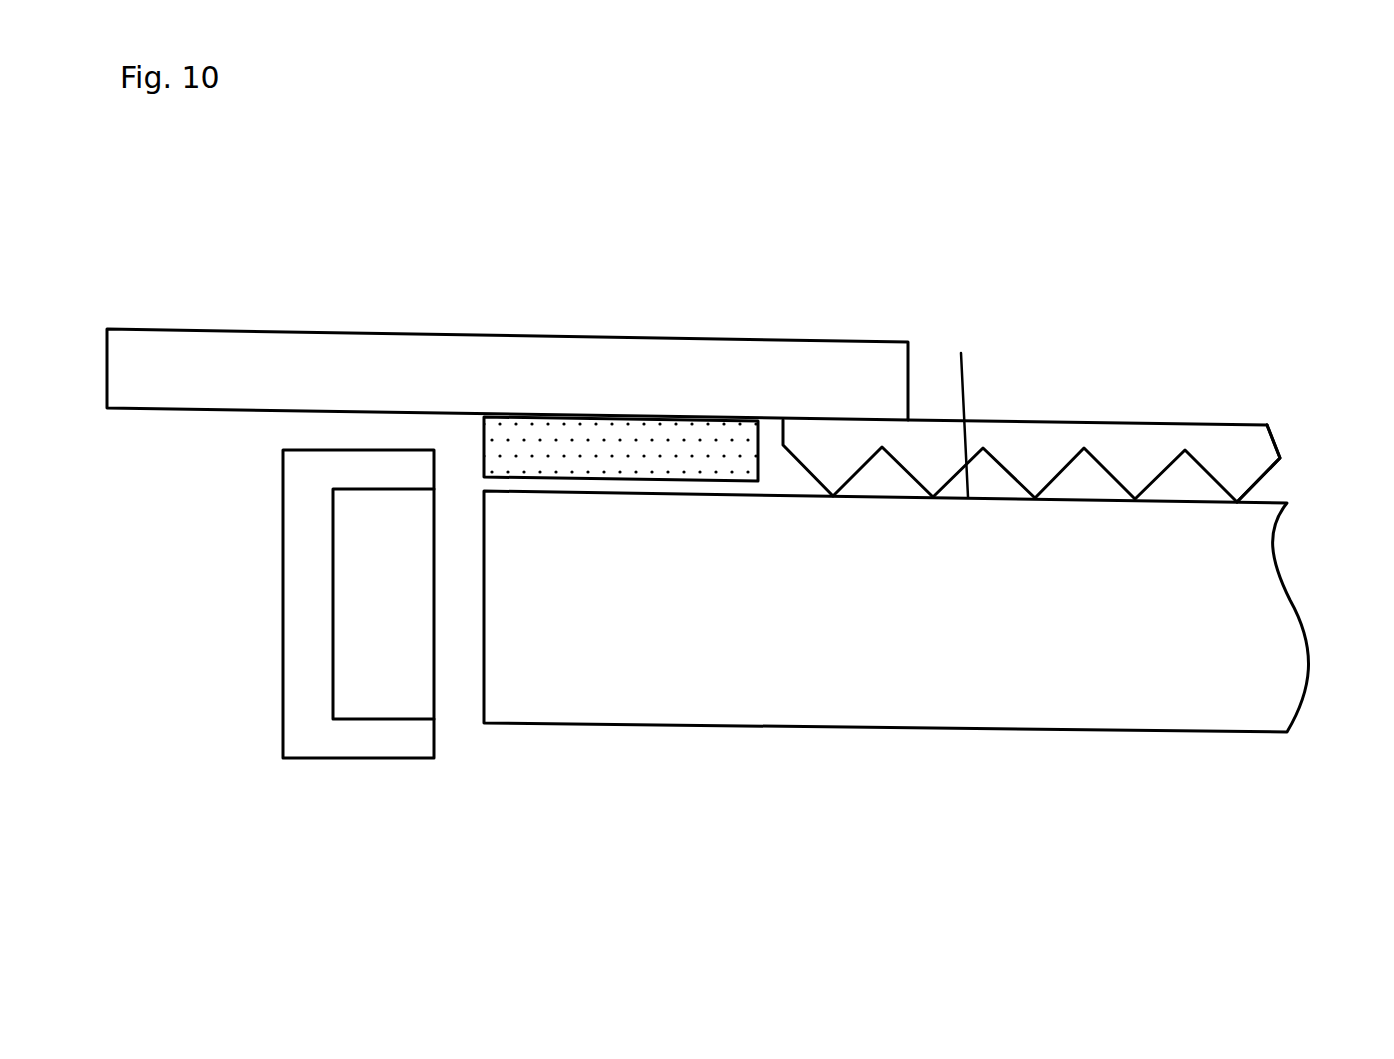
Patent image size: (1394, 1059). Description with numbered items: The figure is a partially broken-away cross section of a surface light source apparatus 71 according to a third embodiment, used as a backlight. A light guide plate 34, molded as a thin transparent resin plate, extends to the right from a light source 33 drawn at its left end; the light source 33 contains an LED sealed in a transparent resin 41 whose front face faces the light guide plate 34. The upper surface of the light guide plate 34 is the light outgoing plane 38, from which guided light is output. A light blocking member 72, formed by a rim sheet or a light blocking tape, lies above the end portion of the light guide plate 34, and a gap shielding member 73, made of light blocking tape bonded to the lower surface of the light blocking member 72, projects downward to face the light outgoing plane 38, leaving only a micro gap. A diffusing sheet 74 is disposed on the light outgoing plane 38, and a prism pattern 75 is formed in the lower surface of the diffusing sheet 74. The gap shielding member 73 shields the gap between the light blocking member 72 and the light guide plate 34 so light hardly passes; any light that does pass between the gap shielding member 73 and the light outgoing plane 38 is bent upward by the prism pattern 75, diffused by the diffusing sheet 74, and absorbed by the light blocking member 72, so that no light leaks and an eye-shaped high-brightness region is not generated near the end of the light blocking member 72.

The surface light source apparatus 71 is at (1210, 205).
The light blocking member 72 is at (533, 367).
The gap shielding member 73 is at (663, 463).
The diffusing sheet 74 is at (1040, 445).
The prism pattern 75 is at (1238, 477).
The light outgoing plane 38 is at (962, 395).
The light guide plate 34 is at (895, 678).
The light source 33 is at (283, 603).
The transparent resin 41 is at (368, 649).